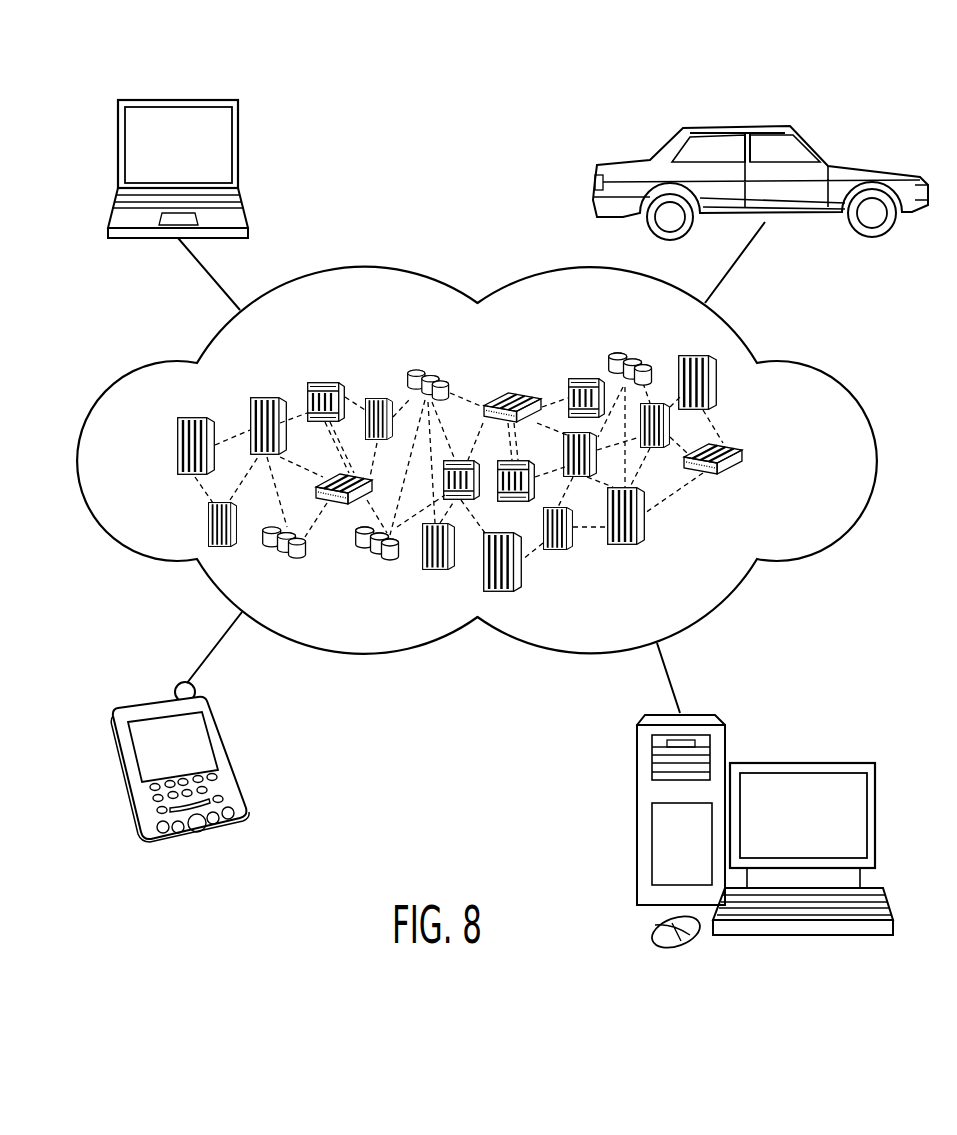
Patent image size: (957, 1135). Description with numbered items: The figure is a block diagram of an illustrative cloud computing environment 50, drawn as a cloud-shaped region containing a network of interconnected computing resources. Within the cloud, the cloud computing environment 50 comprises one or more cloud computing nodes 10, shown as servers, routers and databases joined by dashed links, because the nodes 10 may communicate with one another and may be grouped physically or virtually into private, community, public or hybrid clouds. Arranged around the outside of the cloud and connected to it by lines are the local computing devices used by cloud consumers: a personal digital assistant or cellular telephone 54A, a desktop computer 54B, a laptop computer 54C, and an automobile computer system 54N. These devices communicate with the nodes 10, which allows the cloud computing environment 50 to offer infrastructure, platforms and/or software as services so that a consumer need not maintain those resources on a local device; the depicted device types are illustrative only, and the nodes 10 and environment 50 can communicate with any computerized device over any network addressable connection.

The cloud computing node 10 is at (751, 459).
The cloud computing environment 50 is at (817, 365).
The personal digital assistant or cellular telephone 54A is at (158, 702).
The desktop computer 54B is at (802, 762).
The laptop computer 54C is at (178, 98).
The automobile computer system 54N is at (738, 125).